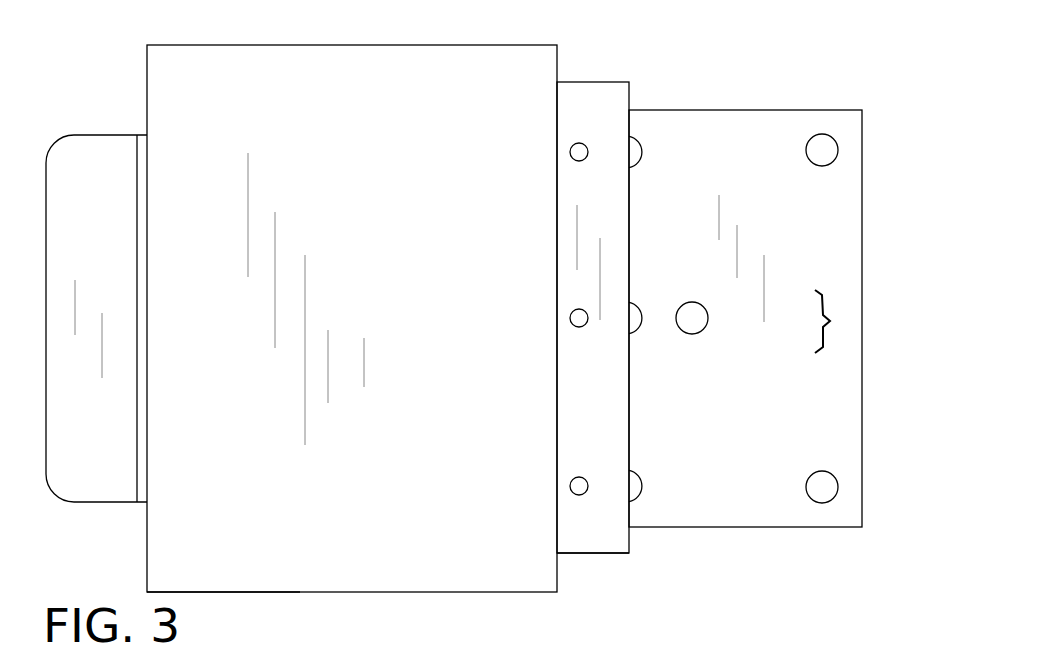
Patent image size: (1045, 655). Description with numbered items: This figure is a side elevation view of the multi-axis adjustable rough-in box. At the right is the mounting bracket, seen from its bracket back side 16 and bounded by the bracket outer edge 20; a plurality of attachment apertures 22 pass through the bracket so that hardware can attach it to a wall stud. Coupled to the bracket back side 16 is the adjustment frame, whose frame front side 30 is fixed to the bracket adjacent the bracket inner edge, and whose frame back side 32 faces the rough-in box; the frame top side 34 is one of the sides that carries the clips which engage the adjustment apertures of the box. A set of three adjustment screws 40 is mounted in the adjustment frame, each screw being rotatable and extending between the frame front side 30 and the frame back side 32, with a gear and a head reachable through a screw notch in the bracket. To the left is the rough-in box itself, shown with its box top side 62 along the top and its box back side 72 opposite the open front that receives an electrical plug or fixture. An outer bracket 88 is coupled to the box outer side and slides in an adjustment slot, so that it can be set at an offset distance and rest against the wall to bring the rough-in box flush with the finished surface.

The bracket back side 16 is at (832, 321).
The bracket outer edge 20 is at (860, 263).
The attachment apertures 22 is at (822, 487).
The frame front side 30 is at (352, 350).
The frame back side 32 is at (577, 542).
The frame top side 34 is at (585, 84).
The adjustment screws 40 is at (579, 486).
The box top side 62 is at (766, 638).
The box back side 72 is at (193, 540).
The outer bracket 88 is at (142, 170).